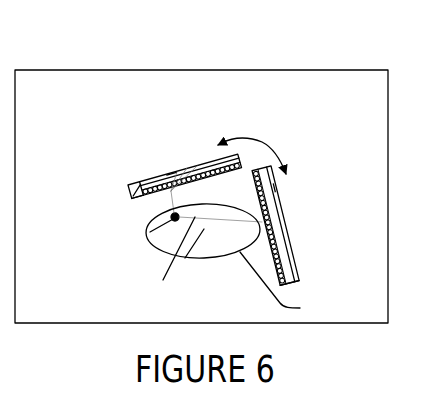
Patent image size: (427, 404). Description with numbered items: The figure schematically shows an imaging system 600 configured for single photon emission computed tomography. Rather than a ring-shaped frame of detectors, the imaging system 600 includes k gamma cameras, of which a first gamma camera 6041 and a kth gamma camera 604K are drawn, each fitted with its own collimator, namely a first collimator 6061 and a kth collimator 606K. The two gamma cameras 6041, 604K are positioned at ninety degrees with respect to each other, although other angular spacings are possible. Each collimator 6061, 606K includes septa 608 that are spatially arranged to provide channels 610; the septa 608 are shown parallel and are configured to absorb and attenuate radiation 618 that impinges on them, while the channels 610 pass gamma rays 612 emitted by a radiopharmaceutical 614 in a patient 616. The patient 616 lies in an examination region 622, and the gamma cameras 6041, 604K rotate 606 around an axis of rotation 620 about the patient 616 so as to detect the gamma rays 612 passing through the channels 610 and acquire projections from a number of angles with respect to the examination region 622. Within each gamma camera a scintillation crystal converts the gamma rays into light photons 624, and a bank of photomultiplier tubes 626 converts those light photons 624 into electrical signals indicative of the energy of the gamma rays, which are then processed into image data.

The imaging system 600 is at (201, 175).
The gamma camera 6041 is at (152, 141).
The gamma camera 604K is at (314, 225).
The rotate 606 is at (277, 140).
The collimator 6061 is at (139, 167).
The collimator 606K is at (312, 227).
The septa 608 is at (208, 230).
The channels 610 is at (210, 196).
The gamma rays 612 is at (168, 195).
The radiopharmaceutical 614 is at (117, 235).
The patient 616 is at (289, 288).
The radiation 618 is at (180, 238).
The axis of rotation 620 is at (150, 262).
The examination region 622 is at (205, 294).
The light photons 624 is at (220, 133).
The photomultiplier tubes 626 is at (265, 135).